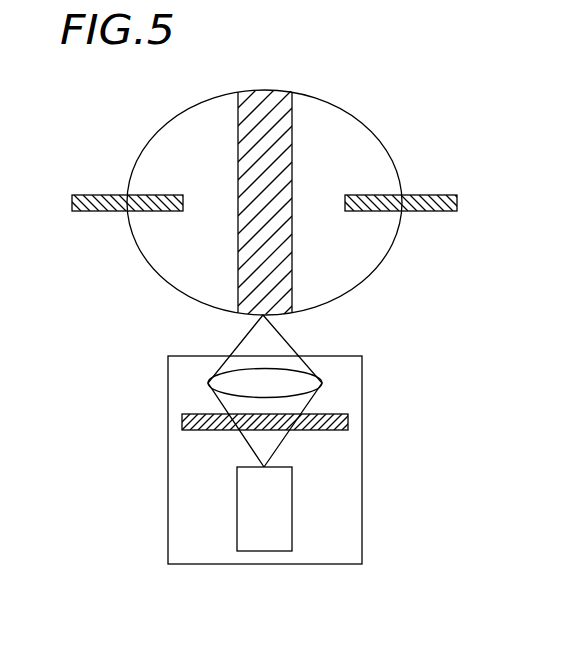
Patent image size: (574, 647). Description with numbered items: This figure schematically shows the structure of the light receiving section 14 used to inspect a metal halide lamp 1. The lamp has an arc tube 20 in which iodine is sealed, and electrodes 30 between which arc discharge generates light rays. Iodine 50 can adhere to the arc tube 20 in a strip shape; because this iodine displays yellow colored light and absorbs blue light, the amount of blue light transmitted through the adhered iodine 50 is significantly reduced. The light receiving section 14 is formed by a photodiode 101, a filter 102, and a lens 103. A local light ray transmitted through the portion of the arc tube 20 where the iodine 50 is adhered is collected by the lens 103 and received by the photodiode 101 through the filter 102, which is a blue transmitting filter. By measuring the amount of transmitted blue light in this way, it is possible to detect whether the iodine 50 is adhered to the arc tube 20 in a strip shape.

The metal halide lamp 1 is at (402, 85).
The arc tube 20 is at (354, 110).
The iodine 50 is at (266, 95).
The electrodes 30 is at (93, 194).
The light receiving section 14 is at (362, 388).
The lens 103 is at (208, 382).
The filter 102 is at (182, 421).
The photodiode 101 is at (277, 551).